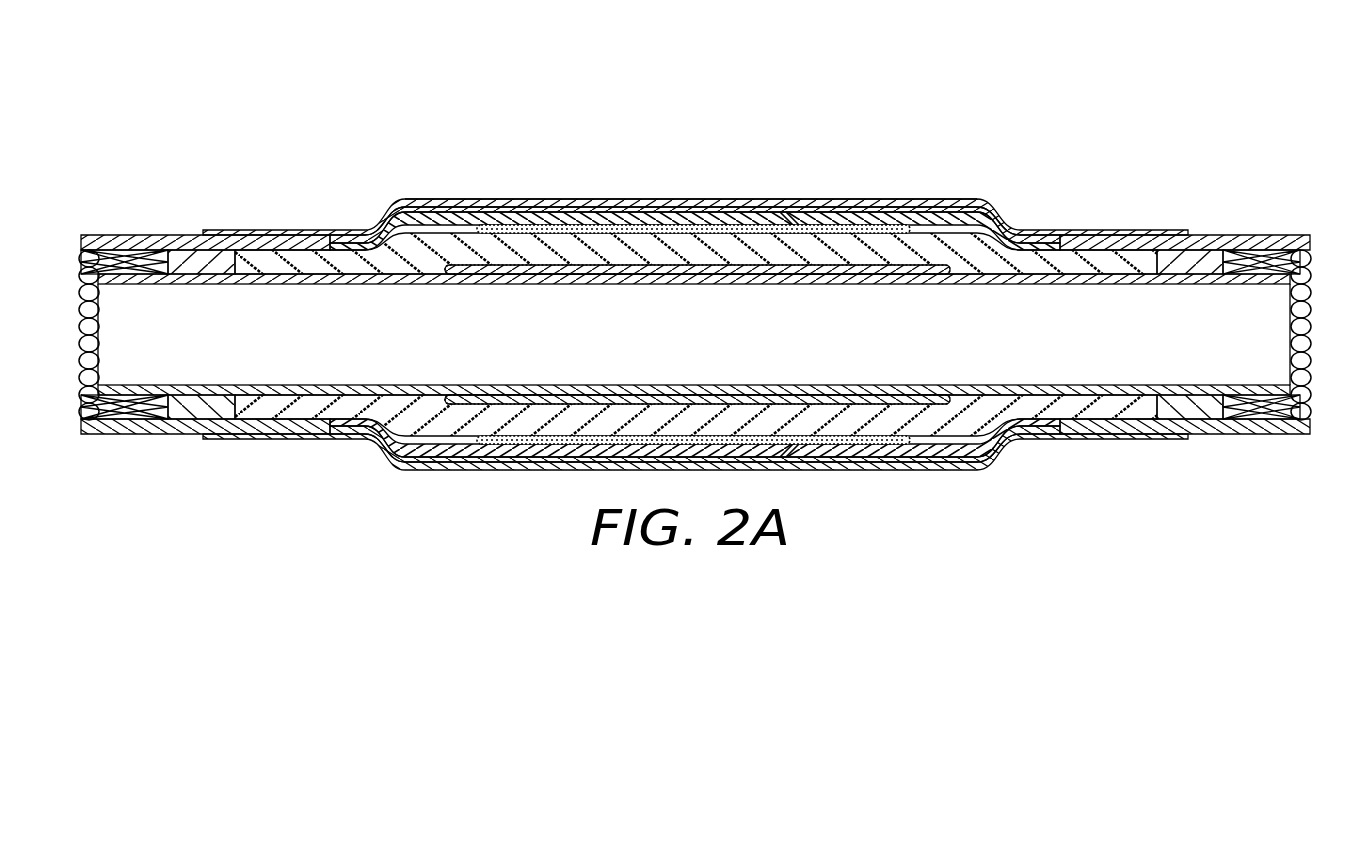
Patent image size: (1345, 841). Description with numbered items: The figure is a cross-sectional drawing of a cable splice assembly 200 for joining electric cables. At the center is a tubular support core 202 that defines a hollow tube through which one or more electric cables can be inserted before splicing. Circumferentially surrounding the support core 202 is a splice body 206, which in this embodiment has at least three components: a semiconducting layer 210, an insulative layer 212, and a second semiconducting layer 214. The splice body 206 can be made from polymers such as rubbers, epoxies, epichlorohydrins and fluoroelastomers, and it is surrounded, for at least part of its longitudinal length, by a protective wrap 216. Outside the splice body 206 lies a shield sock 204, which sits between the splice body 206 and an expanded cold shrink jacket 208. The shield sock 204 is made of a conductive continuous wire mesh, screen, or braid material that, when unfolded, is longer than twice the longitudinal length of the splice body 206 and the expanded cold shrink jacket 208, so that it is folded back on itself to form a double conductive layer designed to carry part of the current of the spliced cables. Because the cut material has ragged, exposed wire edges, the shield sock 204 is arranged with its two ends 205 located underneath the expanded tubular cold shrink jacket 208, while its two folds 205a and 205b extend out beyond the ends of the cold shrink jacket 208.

The cable splice assembly 200 is at (480, 60).
The tubular support core 202 is at (1075, 268).
The shield sock 204 is at (677, 215).
The ends of shield sock 205 is at (599, 203).
The fold of shield sock 205a is at (80, 270).
The fold of shield sock 205b is at (1318, 270).
The splice body 206 is at (486, 142).
The expanded cold shrink jacket 208 is at (943, 200).
The semiconducting layer 210 is at (219, 262).
The insulative layer 212 is at (395, 262).
The second semiconducting layer 214 is at (462, 268).
The protective wrap 216 is at (861, 228).